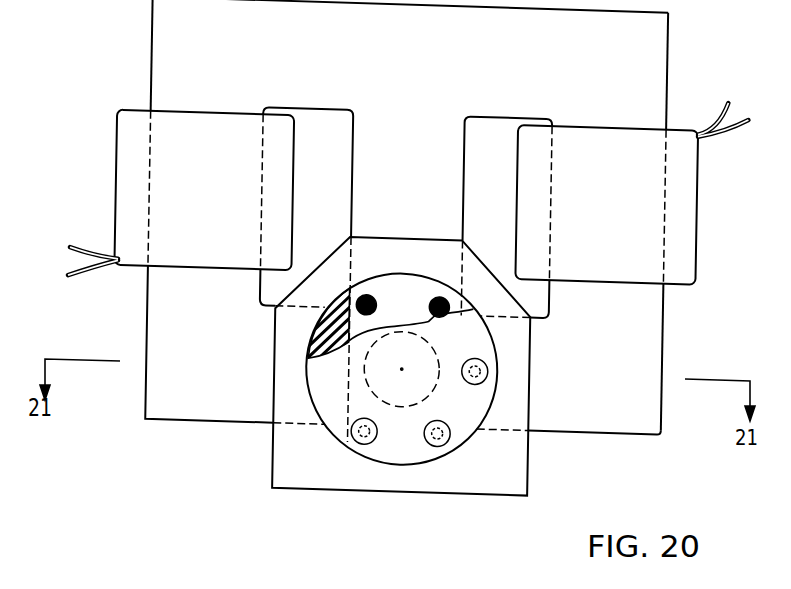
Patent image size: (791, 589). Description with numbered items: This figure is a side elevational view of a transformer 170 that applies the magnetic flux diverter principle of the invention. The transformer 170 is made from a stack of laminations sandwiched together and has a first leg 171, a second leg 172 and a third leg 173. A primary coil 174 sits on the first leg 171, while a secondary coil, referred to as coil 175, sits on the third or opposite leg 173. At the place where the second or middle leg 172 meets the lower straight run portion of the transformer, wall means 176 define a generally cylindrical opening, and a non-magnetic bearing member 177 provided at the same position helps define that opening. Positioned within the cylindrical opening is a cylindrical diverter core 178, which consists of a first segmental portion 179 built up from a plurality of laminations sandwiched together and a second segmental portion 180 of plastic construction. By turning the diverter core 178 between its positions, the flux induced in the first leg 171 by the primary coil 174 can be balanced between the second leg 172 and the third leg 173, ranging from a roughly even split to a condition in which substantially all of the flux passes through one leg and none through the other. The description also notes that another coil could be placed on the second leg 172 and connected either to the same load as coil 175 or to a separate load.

The transformer 170 is at (656, 438).
The first leg 171 is at (652, 310).
The second leg 172 is at (404, 295).
The third leg 173 is at (153, 294).
The primary coil 174 is at (685, 213).
The coil 175 is at (123, 173).
The wall means 176 is at (480, 393).
The non-magnetic bearing member 177 is at (468, 483).
The cylindrical diverter core 178 is at (408, 455).
The first segmental portion 179 is at (410, 284).
The second segmental portion 180 is at (338, 300).